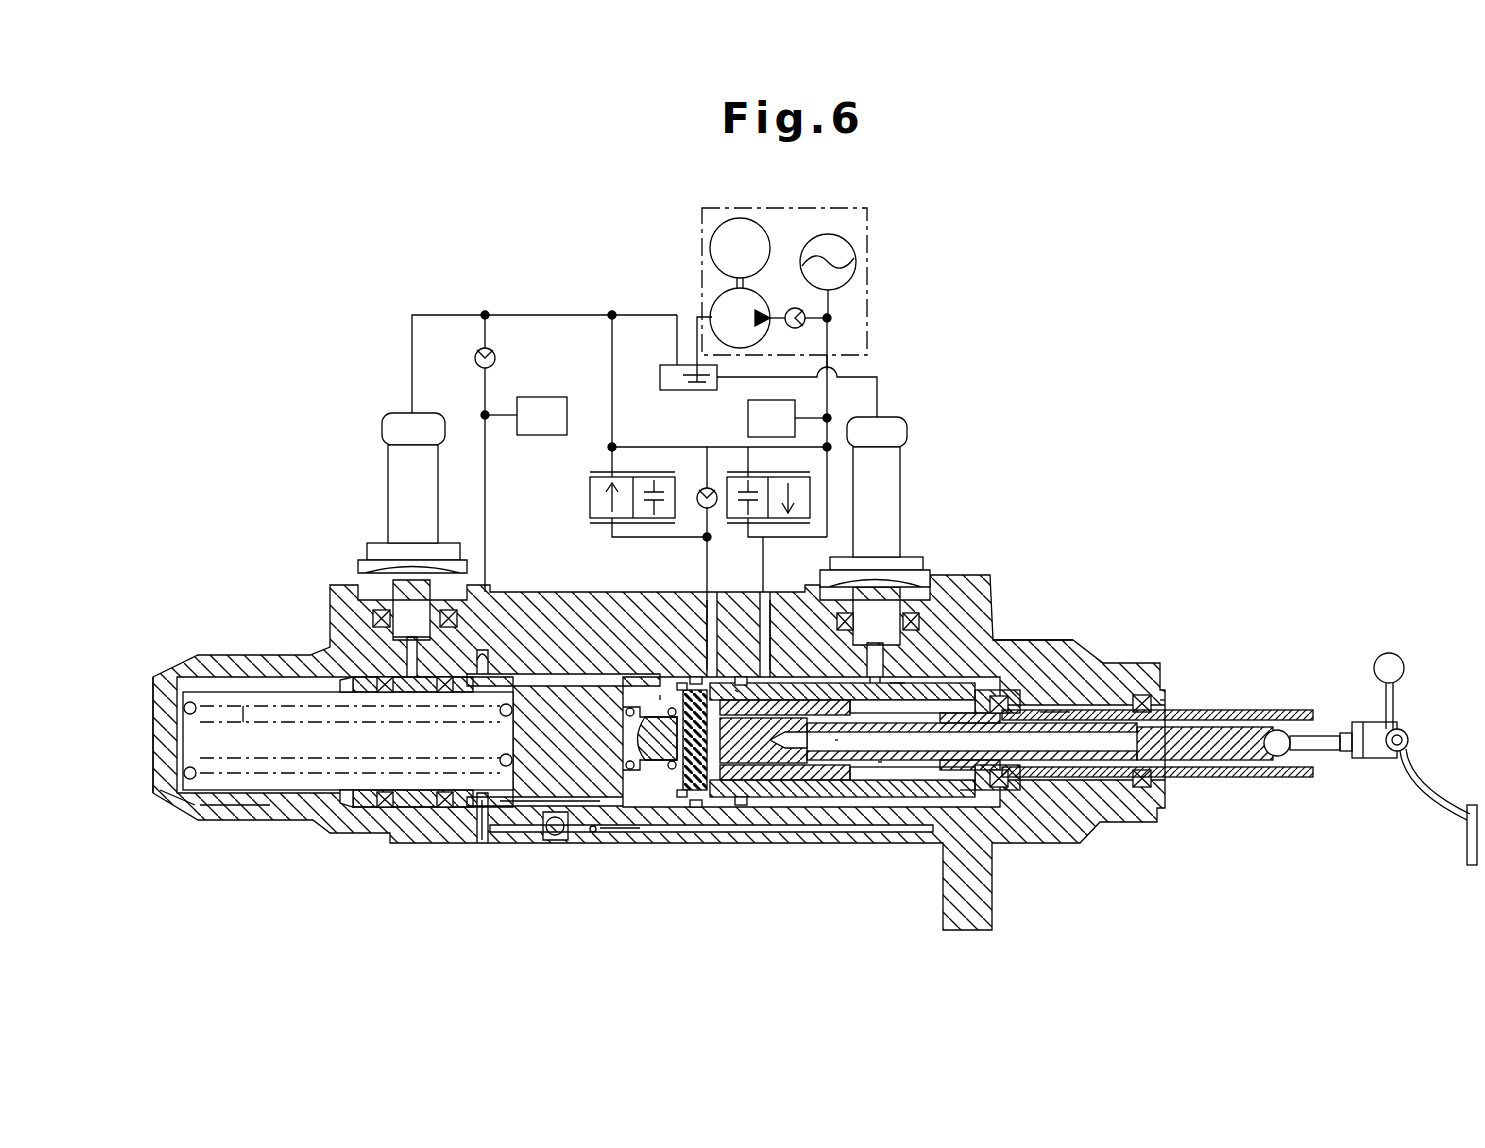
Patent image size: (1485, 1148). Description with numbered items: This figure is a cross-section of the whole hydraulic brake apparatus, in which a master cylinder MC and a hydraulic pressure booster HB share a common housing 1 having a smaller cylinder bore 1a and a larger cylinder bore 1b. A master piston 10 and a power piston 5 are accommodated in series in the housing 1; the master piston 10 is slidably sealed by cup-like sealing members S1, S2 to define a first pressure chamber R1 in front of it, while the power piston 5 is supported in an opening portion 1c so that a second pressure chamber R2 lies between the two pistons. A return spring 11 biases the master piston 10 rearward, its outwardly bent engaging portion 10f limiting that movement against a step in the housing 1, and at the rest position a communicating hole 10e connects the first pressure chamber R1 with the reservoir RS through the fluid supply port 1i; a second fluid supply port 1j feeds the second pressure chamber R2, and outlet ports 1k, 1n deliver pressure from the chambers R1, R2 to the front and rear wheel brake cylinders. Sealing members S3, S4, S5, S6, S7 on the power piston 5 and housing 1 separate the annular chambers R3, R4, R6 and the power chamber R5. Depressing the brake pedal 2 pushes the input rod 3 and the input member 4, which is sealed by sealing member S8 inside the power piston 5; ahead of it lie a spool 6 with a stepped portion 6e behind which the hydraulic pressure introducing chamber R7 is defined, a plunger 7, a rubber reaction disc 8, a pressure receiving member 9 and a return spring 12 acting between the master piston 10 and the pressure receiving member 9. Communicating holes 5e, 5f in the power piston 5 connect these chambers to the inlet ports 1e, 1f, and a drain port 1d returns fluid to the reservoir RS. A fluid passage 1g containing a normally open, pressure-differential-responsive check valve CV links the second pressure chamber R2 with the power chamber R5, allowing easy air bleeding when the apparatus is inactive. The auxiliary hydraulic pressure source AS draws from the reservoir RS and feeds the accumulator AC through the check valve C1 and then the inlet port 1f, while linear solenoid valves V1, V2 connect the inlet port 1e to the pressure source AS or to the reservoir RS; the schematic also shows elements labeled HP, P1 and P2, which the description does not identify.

The housing 1 is at (180, 674).
The cylinder bore 1a is at (234, 808).
The cylinder bore 1b is at (635, 834).
The opening portion 1c is at (1168, 780).
The drain port 1d is at (955, 660).
The inlet port 1e is at (708, 600).
The inlet port 1f is at (767, 600).
The fluid passage 1g is at (598, 808).
The fluid supply port 1i is at (356, 600).
The fluid supply port 1j is at (484, 655).
The fluid outlet port 1k is at (192, 812).
The fluid outlet port 1n is at (483, 838).
The brake pedal 2 is at (1432, 805).
The input rod 3 is at (1320, 750).
The input member 4 is at (1235, 777).
The power piston 5 is at (815, 797).
The communicating hole 5e is at (878, 683).
The communicating hole 5f is at (892, 690).
The spool 6 is at (868, 789).
The stepped portion 6e is at (860, 780).
The plunger 7 is at (790, 780).
The reaction disc 8 is at (700, 790).
The pressure receiving member 9 is at (630, 735).
The master piston 10 is at (369, 734).
The communicating hole 10e is at (393, 717).
The engaging portion 10f is at (350, 800).
The return spring 11 is at (242, 700).
The return spring 12 is at (660, 705).
The master cylinder MC is at (205, 633).
The hydraulic pressure booster HB is at (1005, 625).
The first pressure chamber R1 is at (273, 745).
The second pressure chamber R2 is at (655, 745).
The annular chamber R3 is at (738, 795).
The annular chamber R4 is at (835, 777).
The power chamber R5 is at (968, 850).
The annular chamber R6 is at (1060, 715).
The hydraulic pressure introducing chamber R7 is at (880, 792).
The sealing member S1 is at (382, 805).
The sealing member S2 is at (446, 805).
The sealing member S3 is at (690, 808).
The sealing member S4 is at (745, 805).
The sealing member S5 is at (995, 790).
The sealing member S6 is at (1010, 787).
The sealing member S7 is at (1142, 790).
The sealing member S8 is at (1150, 705).
The pressure differential responsive check valve CV is at (555, 840).
The pressure sensor P1 is at (789, 425).
The pressure sensor P2 is at (529, 451).
The linear solenoid valve V1 is at (756, 530).
The linear solenoid valve V2 is at (592, 492).
The auxiliary hydraulic pressure source AS is at (808, 283).
The hydraulic pump HP is at (714, 302).
The accumulator AC is at (856, 248).
The check valve C1 is at (796, 308).
The reservoir RS is at (682, 392).